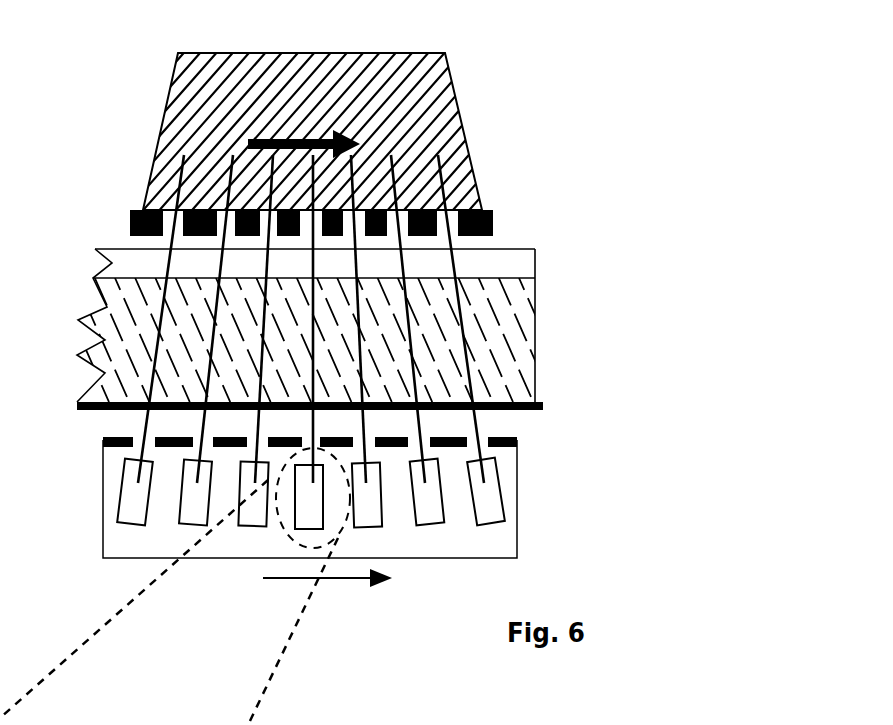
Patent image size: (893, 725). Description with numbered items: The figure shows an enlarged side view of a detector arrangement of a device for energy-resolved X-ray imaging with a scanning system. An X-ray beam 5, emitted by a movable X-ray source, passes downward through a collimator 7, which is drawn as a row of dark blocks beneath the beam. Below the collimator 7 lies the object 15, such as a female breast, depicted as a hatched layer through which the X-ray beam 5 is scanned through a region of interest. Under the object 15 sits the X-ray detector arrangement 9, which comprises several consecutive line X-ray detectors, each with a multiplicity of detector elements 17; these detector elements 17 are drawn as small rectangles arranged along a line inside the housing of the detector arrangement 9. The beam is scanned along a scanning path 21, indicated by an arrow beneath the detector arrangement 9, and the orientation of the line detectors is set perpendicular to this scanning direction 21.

The X-ray beam 5 is at (431, 121).
The collimator 7 is at (493, 218).
The object 15 is at (512, 355).
The X-ray detector arrangement 9 is at (536, 468).
The detector elements 17 is at (493, 500).
The scanning path 21 is at (347, 582).